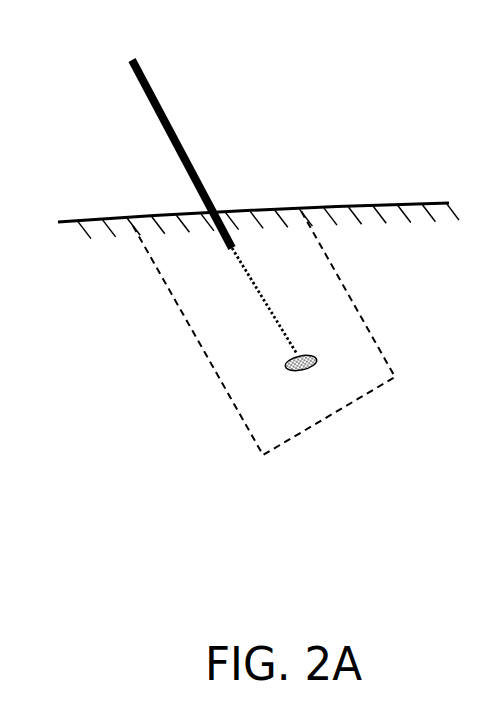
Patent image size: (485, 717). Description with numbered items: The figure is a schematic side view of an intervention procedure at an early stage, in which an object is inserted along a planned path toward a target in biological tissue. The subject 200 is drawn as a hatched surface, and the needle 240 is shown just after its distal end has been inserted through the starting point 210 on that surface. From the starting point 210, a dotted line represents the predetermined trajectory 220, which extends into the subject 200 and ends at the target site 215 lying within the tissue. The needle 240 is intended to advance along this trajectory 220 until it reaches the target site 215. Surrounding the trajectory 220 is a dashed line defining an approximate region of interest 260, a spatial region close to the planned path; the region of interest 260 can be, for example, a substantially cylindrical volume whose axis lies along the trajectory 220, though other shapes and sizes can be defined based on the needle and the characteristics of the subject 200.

The subject 200 is at (368, 217).
The starting point 210 is at (226, 202).
The target site 215 is at (302, 372).
The predetermined trajectory 220 is at (273, 308).
The needle 240 is at (182, 163).
The region of interest 260 is at (203, 310).